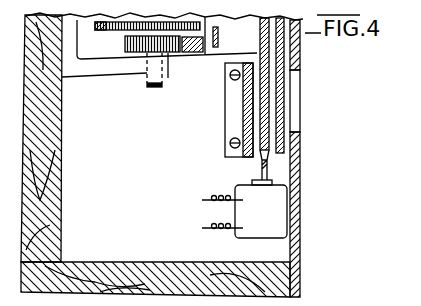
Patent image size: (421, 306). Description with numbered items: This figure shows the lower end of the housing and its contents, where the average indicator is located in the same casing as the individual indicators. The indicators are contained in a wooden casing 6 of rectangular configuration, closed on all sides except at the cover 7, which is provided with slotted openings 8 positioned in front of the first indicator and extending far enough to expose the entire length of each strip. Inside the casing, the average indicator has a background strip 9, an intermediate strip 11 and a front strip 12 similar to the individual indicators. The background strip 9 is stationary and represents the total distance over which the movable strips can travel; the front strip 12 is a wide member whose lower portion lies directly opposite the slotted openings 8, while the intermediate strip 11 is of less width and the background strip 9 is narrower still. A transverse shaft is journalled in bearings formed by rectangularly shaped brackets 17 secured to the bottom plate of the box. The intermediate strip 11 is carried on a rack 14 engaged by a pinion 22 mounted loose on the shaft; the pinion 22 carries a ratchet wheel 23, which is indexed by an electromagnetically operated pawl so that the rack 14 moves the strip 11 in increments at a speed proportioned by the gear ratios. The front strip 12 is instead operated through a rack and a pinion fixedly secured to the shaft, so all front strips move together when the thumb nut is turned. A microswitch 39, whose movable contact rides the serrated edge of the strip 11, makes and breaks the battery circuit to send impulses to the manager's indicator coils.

The wooden casing 6 is at (57, 183).
The cover 7 is at (298, 208).
The slotted openings 8 is at (299, 94).
The background strip 9 is at (225, 113).
The intermediate strip 11 is at (261, 148).
The front strip 12 is at (280, 132).
The rack 14 is at (186, 52).
The rectangularly shaped brackets 17 is at (88, 78).
The pinion 22 is at (171, 55).
The ratchet wheel 23 is at (117, 30).
The microswitch 39 is at (272, 221).